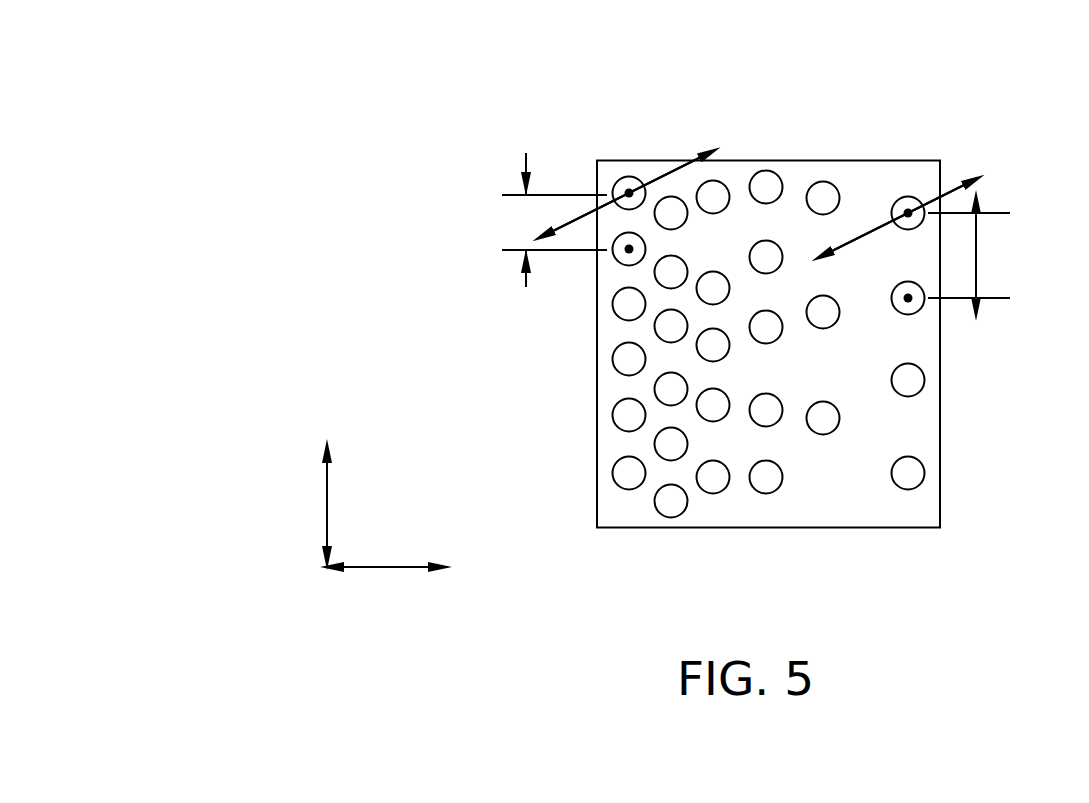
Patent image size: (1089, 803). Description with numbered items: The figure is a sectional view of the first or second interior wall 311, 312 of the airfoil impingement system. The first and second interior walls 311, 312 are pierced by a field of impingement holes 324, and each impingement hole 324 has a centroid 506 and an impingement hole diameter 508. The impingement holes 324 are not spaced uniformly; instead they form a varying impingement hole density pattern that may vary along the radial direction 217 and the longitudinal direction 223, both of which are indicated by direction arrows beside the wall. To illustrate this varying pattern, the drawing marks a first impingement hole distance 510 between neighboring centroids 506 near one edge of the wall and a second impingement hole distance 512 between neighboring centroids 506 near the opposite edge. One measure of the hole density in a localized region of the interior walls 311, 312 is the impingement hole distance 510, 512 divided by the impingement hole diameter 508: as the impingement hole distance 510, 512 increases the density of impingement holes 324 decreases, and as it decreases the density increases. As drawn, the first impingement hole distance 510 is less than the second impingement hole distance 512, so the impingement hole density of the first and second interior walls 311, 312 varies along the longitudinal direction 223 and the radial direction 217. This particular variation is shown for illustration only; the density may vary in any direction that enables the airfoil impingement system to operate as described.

The first interior wall 311 is at (768, 282).
The second interior wall 312 is at (770, 160).
The impingement holes 324 is at (614, 182).
The centroid 506 is at (629, 193).
The impingement hole diameter 508 is at (634, 185).
The first impingement hole distance 510 is at (526, 218).
The second impingement hole distance 512 is at (978, 250).
The radial direction 217 is at (327, 502).
The longitudinal direction 223 is at (385, 569).